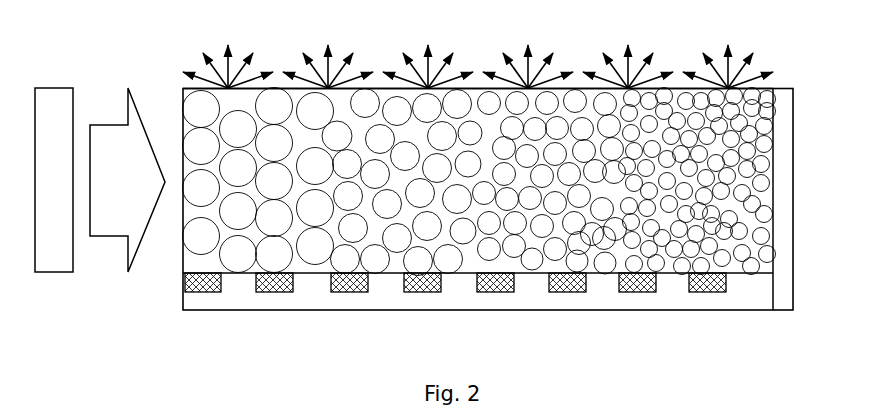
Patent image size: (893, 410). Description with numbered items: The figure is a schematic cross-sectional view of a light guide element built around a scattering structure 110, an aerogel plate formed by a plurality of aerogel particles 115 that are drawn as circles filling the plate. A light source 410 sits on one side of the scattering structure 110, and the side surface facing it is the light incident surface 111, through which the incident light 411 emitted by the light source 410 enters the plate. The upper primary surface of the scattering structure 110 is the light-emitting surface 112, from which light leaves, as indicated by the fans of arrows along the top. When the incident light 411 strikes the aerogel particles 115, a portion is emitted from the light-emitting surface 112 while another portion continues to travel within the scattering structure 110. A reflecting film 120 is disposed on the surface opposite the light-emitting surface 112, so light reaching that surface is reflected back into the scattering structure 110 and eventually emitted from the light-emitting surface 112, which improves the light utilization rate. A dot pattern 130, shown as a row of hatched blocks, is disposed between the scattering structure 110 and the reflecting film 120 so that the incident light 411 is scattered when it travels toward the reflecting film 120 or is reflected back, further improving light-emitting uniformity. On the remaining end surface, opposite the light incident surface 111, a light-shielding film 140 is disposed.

The scattering structure 110 is at (488, 186).
The light incident surface 111 is at (185, 148).
The light-emitting surface 112 is at (475, 88).
The aerogel particles 115 is at (552, 255).
The reflecting film 120 is at (308, 292).
The dot pattern 130 is at (200, 293).
The light-shielding film 140 is at (785, 237).
The light source 410 is at (54, 255).
The incident light 411 is at (97, 168).